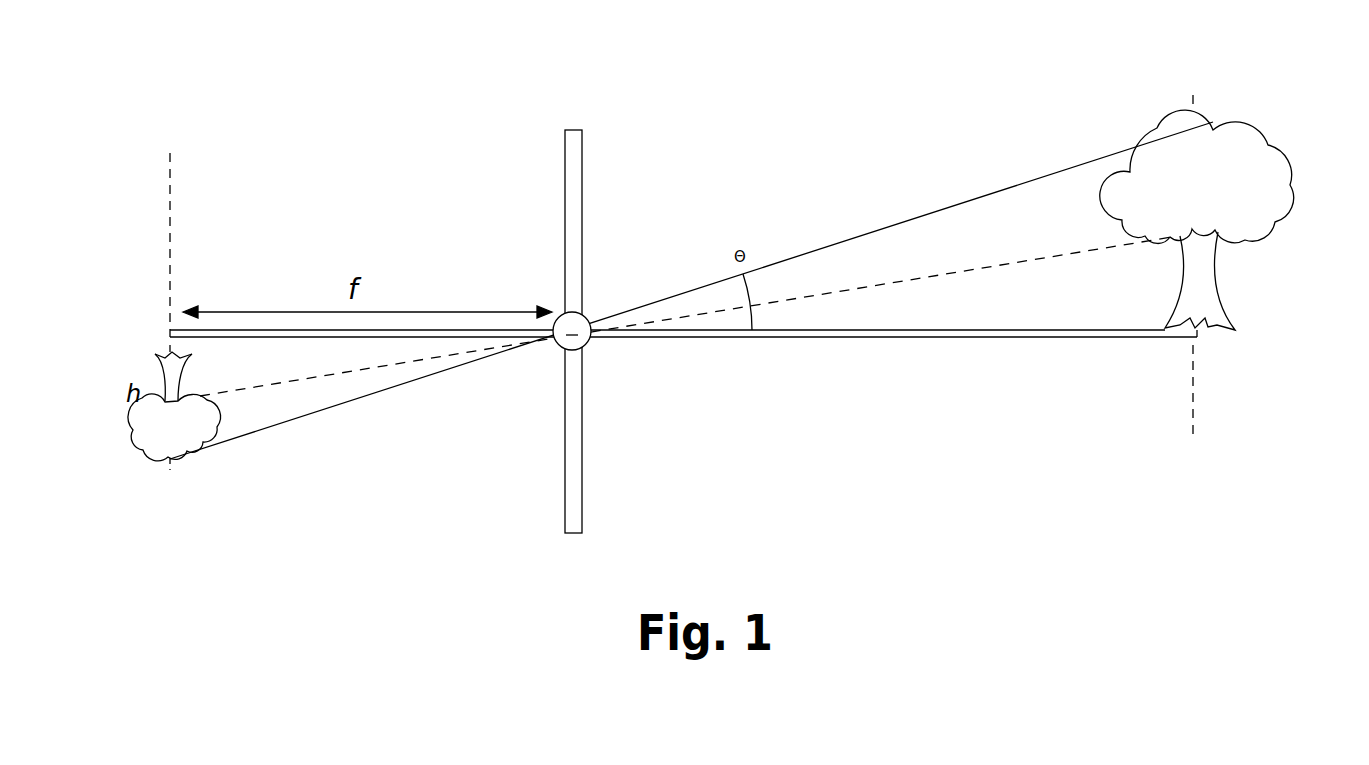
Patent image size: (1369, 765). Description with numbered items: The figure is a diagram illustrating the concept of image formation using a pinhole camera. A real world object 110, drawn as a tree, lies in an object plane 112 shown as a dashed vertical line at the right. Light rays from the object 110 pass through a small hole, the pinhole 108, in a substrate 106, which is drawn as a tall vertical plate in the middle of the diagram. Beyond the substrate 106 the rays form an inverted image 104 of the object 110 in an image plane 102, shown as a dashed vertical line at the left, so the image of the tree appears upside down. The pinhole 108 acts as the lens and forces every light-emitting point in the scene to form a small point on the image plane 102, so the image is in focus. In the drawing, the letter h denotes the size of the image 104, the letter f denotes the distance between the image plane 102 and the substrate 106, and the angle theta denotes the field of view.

The image plane 102 is at (170, 187).
The inverted image 104 is at (145, 443).
The substrate 106 is at (583, 148).
The pinhole 108 is at (588, 318).
The real world object 110 is at (1267, 139).
The object plane 112 is at (1193, 388).